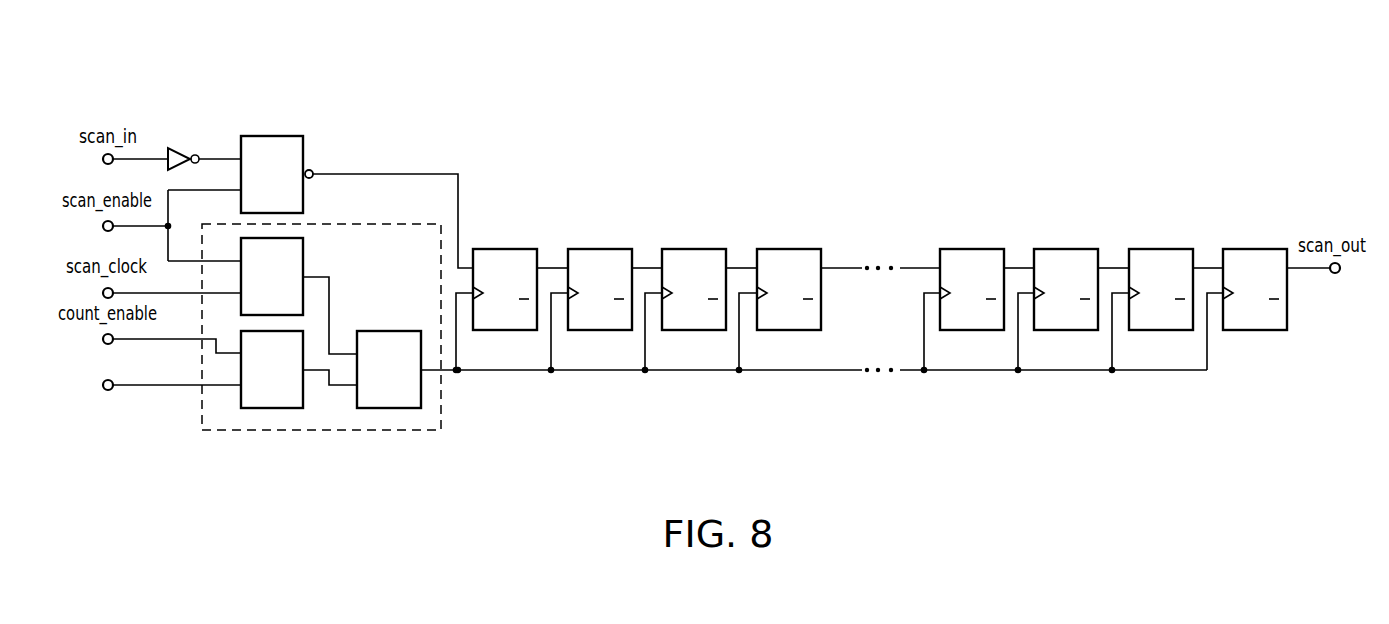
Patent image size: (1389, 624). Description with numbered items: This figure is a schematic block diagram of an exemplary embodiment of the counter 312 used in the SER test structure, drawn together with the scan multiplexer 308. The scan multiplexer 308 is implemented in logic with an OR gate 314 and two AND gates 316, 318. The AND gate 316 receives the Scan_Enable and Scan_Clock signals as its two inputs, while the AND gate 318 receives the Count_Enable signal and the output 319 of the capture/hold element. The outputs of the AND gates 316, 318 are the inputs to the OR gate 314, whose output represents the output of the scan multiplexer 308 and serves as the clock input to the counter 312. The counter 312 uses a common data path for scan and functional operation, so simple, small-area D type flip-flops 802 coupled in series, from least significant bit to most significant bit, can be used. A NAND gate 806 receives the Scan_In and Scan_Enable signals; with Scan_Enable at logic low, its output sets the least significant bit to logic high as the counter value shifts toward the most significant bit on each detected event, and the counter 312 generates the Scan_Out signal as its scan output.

The counter 312 is at (644, 103).
The D type flip-flops 802 is at (871, 285).
The NAND gate 806 is at (272, 136).
The scan multiplexer 308 is at (365, 431).
The OR gate 314 is at (385, 331).
The AND gate 316 is at (303, 245).
The AND gate 318 is at (272, 409).
The output of the capture/hold element 319 is at (158, 386).